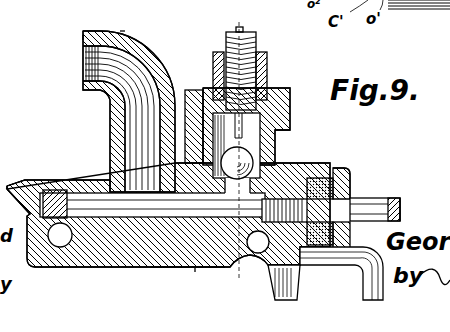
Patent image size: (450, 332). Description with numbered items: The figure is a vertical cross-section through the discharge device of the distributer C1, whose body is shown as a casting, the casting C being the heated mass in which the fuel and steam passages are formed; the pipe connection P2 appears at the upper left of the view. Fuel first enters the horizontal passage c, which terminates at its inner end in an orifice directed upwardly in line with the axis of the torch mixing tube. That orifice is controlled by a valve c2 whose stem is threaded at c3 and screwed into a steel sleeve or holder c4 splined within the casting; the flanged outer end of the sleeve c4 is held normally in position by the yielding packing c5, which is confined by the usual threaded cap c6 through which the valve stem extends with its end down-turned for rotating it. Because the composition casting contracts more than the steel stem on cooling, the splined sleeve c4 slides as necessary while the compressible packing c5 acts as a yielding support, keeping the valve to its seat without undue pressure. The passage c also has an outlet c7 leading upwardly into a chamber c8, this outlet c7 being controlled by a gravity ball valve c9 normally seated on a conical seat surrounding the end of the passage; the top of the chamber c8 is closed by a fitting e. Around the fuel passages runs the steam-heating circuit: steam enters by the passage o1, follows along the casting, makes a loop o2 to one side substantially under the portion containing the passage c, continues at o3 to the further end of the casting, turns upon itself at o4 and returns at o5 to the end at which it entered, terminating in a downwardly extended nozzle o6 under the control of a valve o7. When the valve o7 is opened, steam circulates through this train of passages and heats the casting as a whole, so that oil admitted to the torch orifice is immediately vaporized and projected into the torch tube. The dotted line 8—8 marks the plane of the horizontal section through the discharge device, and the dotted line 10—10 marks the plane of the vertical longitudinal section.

The valve casing body C is at (168, 224).
The distributer C1 is at (187, 280).
The elbow pipe P2 is at (120, 111).
The horizontal passage c is at (268, 95).
The valve c2 is at (62, 190).
The threaded portion of valve stem c3 is at (350, 186).
The steel sleeve or holder c4 is at (318, 178).
The packing c5 is at (362, 203).
The threaded cap c6 is at (336, 170).
The outlet c7 is at (280, 172).
The chamber c8 is at (262, 50).
The gravity ball valve c9 is at (287, 138).
The passage o1 is at (197, 280).
The loop o2 is at (62, 247).
The passage continuation o3 is at (128, 15).
The turn of passage o4 is at (61, 20).
The return passage o5 is at (245, 200).
The nozzle o6 is at (300, 280).
The valve o7 is at (366, 255).
The fitting e is at (5, 199).
The section line 8— 8 is at (411, 210).
The section line 10— 10 is at (240, 150).